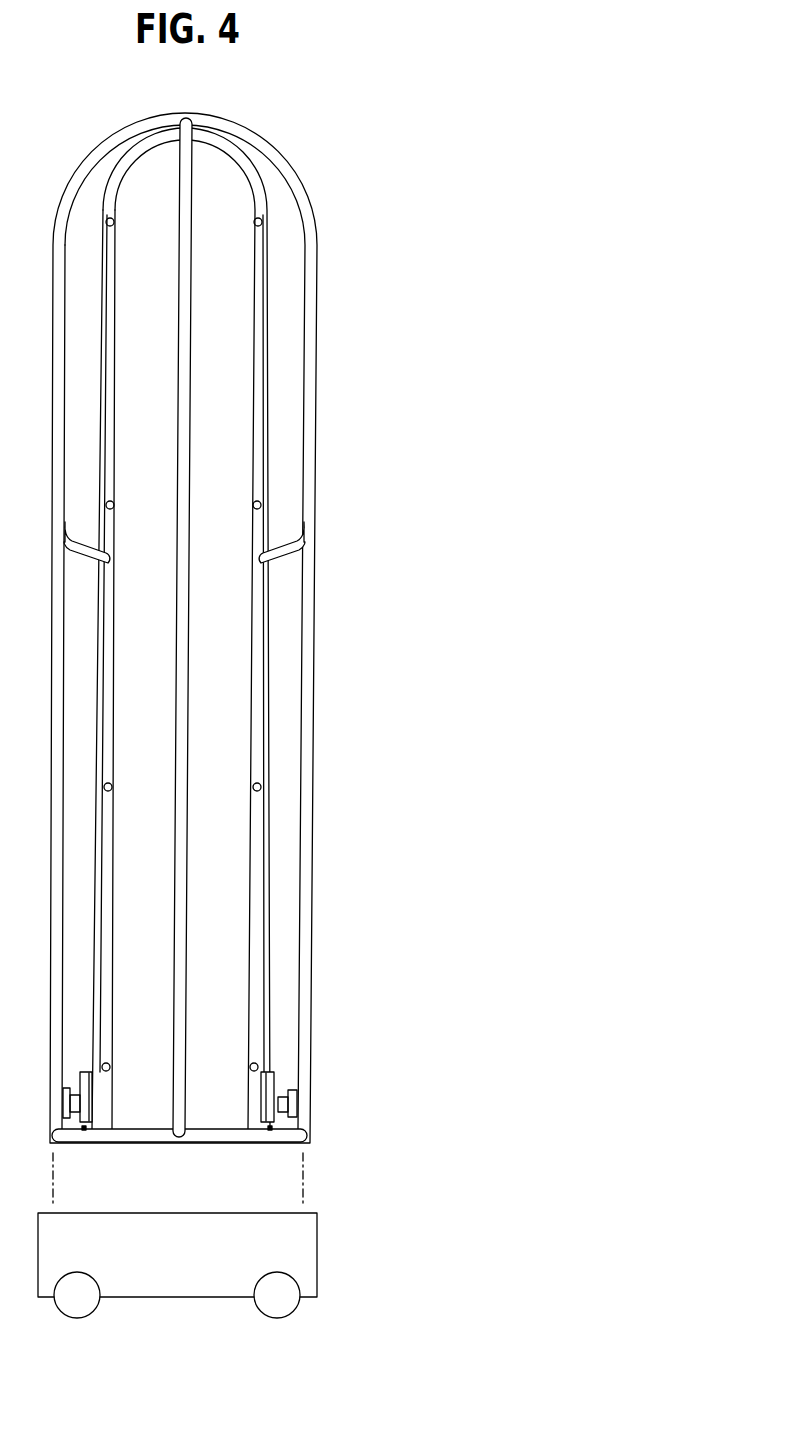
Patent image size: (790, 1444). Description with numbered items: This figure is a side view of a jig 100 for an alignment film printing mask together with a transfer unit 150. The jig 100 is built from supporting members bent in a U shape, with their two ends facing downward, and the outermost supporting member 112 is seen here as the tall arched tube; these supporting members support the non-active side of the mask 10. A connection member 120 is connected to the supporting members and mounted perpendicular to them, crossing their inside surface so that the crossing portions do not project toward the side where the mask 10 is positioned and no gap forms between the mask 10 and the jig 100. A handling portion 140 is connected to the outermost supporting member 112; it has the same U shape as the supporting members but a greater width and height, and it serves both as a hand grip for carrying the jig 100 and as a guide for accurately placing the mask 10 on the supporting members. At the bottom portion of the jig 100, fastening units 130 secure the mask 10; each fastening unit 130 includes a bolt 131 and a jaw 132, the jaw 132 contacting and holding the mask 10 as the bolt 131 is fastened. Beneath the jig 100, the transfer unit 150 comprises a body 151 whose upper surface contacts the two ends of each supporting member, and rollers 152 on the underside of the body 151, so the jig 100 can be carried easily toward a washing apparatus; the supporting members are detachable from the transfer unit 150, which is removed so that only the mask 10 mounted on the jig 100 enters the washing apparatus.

The jig 100 is at (284, 145).
The supporting member 112 is at (257, 310).
The connection member 120 is at (262, 498).
The handling portion 140 is at (290, 553).
The mask 10 is at (270, 943).
The fastening unit 130 is at (256, 1090).
The bolt 131 is at (297, 1100).
The jaw 132 is at (275, 1075).
The transfer unit 150 is at (248, 1272).
The body 151 is at (307, 1252).
The roller 152 is at (290, 1306).